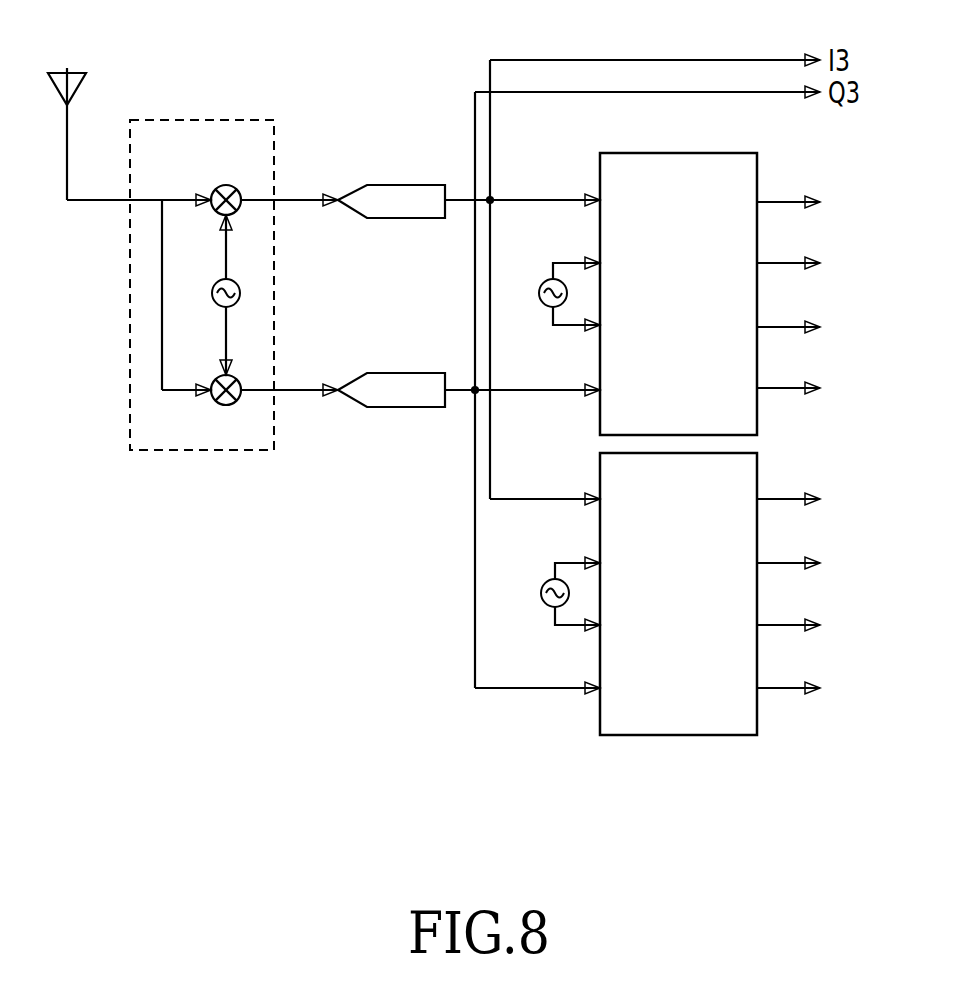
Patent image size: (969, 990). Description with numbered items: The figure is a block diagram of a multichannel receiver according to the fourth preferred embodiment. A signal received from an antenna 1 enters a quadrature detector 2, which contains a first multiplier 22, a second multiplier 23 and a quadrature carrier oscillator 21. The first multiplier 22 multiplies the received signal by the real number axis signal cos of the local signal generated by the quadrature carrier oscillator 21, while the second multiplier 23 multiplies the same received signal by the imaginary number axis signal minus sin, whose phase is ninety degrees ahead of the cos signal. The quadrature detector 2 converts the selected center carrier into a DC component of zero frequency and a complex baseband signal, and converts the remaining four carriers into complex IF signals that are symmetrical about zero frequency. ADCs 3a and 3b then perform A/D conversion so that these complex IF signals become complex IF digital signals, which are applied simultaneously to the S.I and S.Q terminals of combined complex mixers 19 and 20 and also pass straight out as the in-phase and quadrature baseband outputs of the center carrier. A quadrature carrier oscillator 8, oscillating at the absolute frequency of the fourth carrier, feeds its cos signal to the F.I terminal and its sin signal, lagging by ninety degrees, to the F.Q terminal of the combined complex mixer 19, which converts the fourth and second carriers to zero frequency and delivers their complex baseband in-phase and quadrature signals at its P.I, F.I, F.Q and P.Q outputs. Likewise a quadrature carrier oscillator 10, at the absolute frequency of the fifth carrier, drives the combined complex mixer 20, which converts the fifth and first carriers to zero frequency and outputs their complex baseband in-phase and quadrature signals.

The antenna 1 is at (67, 70).
The quadrature detector 2 is at (201, 120).
The ADC 3a is at (406, 185).
The ADC 3b is at (406, 373).
The quadrature carrier oscillator 8 is at (545, 310).
The quadrature carrier oscillator 10 is at (550, 608).
The combined complex mixer 19 is at (680, 153).
The combined complex mixer 20 is at (681, 735).
The quadrature carrier oscillator 21 is at (238, 284).
The first multiplier 22 is at (236, 188).
The second multiplier 23 is at (238, 378).